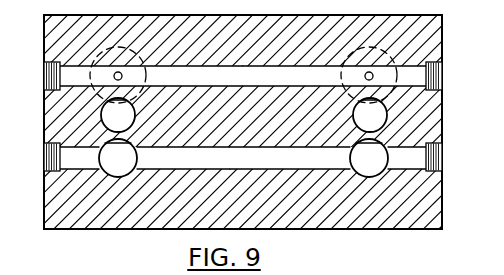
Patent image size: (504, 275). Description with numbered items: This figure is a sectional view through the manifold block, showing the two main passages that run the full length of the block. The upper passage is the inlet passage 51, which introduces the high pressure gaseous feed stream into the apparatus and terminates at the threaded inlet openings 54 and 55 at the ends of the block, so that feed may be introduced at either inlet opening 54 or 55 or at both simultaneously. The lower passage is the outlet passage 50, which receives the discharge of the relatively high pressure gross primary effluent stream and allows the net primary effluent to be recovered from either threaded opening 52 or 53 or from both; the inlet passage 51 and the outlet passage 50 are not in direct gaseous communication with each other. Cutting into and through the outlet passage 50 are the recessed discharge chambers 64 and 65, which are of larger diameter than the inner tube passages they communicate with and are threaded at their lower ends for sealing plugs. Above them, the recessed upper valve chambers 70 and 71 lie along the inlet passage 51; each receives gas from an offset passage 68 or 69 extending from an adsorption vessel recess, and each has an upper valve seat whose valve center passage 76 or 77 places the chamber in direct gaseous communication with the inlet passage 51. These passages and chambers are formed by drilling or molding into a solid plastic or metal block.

The outlet passage 50 is at (257, 144).
The inlet passage 51 is at (253, 67).
The threaded opening 52 is at (442, 159).
The threaded opening 53 is at (44, 159).
The inlet opening 54 is at (44, 77).
The inlet opening 55 is at (442, 77).
The recessed discharge chamber 64 is at (350, 158).
The recessed discharge chamber 65 is at (137, 158).
The offset passage 68 is at (387, 118).
The offset passage 69 is at (101, 116).
The upper valve chamber 70 is at (340, 76).
The upper valve chamber 71 is at (92, 77).
The valve center passage 76 is at (373, 76).
The valve center passage 77 is at (122, 76).